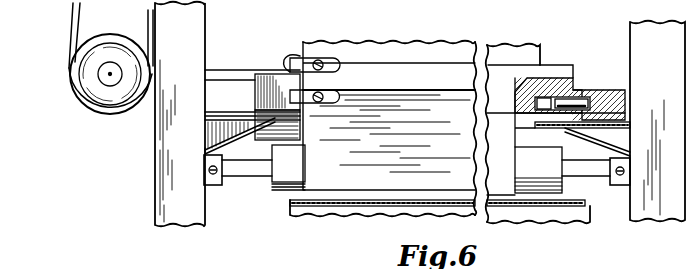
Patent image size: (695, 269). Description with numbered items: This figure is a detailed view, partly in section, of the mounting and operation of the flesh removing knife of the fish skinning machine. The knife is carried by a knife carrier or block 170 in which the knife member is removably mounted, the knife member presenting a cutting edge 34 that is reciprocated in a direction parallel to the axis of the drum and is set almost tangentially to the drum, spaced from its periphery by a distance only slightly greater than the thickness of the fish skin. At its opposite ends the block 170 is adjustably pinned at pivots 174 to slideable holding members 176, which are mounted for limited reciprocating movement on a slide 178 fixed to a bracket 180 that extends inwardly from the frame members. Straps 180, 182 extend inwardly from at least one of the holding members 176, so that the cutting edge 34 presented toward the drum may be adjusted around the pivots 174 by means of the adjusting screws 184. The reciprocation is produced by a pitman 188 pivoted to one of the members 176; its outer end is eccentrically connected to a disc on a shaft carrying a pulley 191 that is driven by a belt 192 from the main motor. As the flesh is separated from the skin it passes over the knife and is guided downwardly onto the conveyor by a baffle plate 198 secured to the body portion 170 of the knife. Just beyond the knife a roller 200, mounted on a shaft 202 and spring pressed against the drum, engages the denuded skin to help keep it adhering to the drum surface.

The cutting edge 34 is at (550, 70).
The knife carrier or block 170 is at (565, 78).
The pivots 174 is at (573, 100).
The slideable holding members 176 is at (268, 85).
The slide 178 is at (623, 112).
The bracket 180 is at (292, 58).
The strap 182 is at (325, 97).
The adjusting screws 184 is at (325, 66).
The pitman 188 is at (245, 52).
The pulley 191 is at (138, 22).
The belt 192 is at (73, 15).
The baffle plate 198 is at (372, 178).
The roller 200 is at (265, 182).
The shaft 202 is at (252, 183).